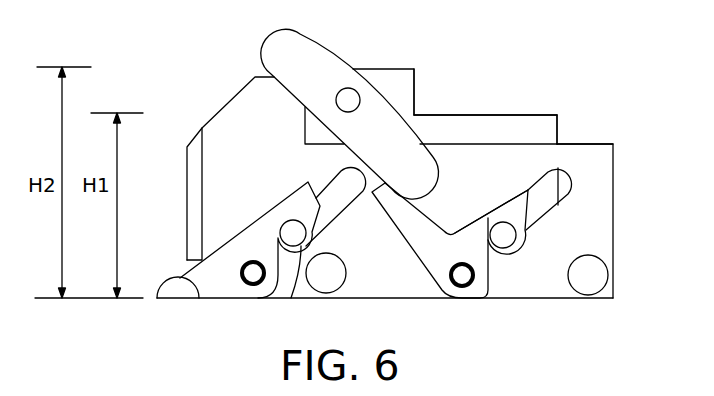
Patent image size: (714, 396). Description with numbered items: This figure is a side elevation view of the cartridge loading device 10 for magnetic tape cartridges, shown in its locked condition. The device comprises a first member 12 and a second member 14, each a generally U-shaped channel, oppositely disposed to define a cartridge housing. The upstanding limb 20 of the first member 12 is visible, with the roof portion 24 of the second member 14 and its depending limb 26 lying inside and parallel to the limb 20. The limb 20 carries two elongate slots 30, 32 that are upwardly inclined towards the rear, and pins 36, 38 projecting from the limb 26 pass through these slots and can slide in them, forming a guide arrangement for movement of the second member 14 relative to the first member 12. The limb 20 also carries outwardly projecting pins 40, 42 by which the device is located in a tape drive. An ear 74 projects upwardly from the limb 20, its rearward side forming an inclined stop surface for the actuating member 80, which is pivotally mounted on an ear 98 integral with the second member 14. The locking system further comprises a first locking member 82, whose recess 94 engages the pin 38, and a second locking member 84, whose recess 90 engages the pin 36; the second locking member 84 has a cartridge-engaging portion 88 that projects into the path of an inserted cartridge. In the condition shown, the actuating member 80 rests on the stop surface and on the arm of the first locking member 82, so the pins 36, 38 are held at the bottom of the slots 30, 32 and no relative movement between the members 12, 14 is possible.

The cartridge loading device 10 is at (172, 92).
The first member 12 is at (592, 126).
The second member 14 is at (507, 96).
The limb 20 is at (604, 231).
The roof portion 24 is at (455, 110).
The limb 26 is at (549, 124).
The slot 30 is at (343, 198).
The slot 32 is at (571, 180).
The pin 36 is at (293, 246).
The pin 38 is at (510, 238).
The pin 40 is at (326, 290).
The pin 42 is at (603, 274).
The ear 74 is at (240, 98).
The actuating member 80 is at (316, 56).
The first locking member 82 is at (428, 288).
The second locking member 84 is at (224, 306).
The cartridge-engaging portion 88 is at (177, 296).
The recess 90 is at (270, 220).
The recess 94 is at (488, 228).
The ear 98 is at (402, 72).